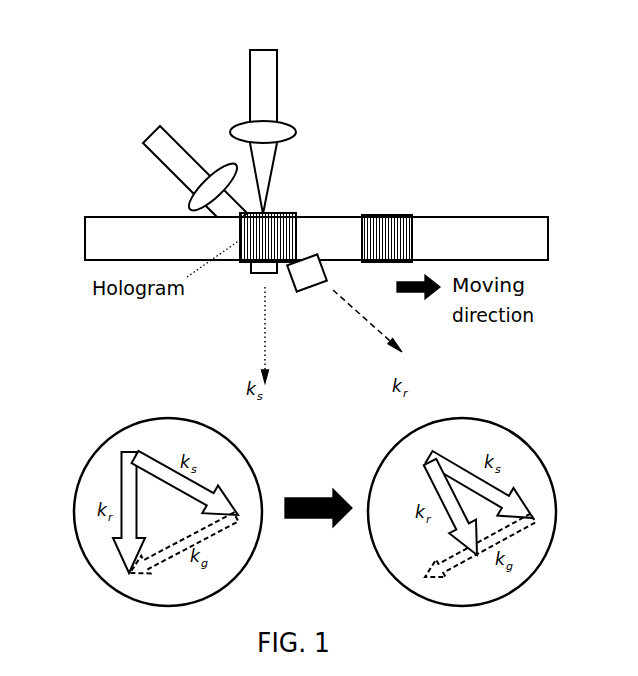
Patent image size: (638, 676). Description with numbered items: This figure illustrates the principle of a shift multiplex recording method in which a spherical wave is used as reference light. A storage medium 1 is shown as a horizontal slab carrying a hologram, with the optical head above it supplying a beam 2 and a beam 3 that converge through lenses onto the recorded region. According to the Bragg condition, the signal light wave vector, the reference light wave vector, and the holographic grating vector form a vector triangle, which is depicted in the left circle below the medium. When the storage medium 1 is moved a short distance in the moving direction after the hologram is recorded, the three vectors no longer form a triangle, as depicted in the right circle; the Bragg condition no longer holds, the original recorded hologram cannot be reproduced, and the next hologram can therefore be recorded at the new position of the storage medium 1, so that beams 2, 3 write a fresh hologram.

The storage medium 1 is at (83, 208).
The reference beam with focusing lens 2 is at (145, 120).
The signal beam with focusing lens 3 is at (240, 60).